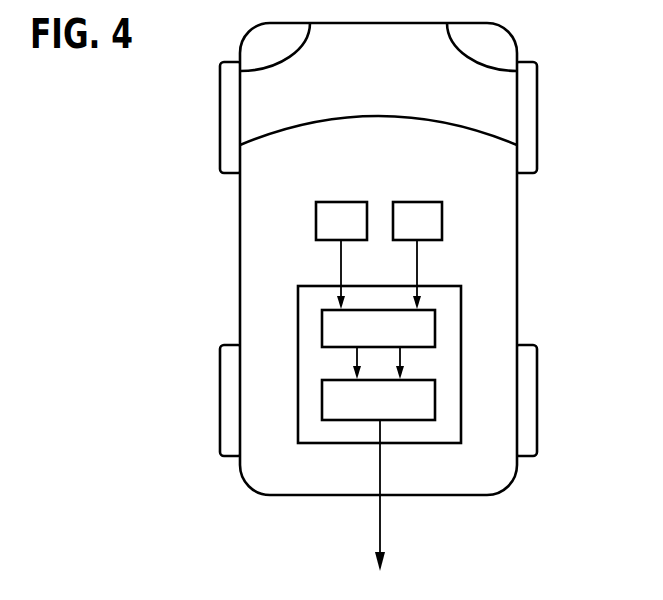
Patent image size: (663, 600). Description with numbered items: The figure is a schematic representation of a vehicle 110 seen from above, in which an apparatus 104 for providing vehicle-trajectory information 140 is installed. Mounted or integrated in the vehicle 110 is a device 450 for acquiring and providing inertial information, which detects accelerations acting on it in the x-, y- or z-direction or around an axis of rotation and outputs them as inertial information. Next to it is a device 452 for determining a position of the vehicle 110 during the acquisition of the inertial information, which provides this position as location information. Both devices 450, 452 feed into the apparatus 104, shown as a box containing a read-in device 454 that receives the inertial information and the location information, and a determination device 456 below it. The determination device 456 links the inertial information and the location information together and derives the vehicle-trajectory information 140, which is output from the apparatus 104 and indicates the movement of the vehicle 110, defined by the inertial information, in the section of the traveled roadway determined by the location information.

The vehicle 110 is at (517, 270).
The apparatus for providing vehicle-trajectory information 104 is at (461, 320).
The device for acquiring and providing inertial information 450 is at (316, 222).
The device for determining a position of the vehicle 452 is at (442, 222).
The read-in device 454 is at (322, 327).
The determination device 456 is at (338, 420).
The vehicle-trajectory information 140 is at (380, 532).